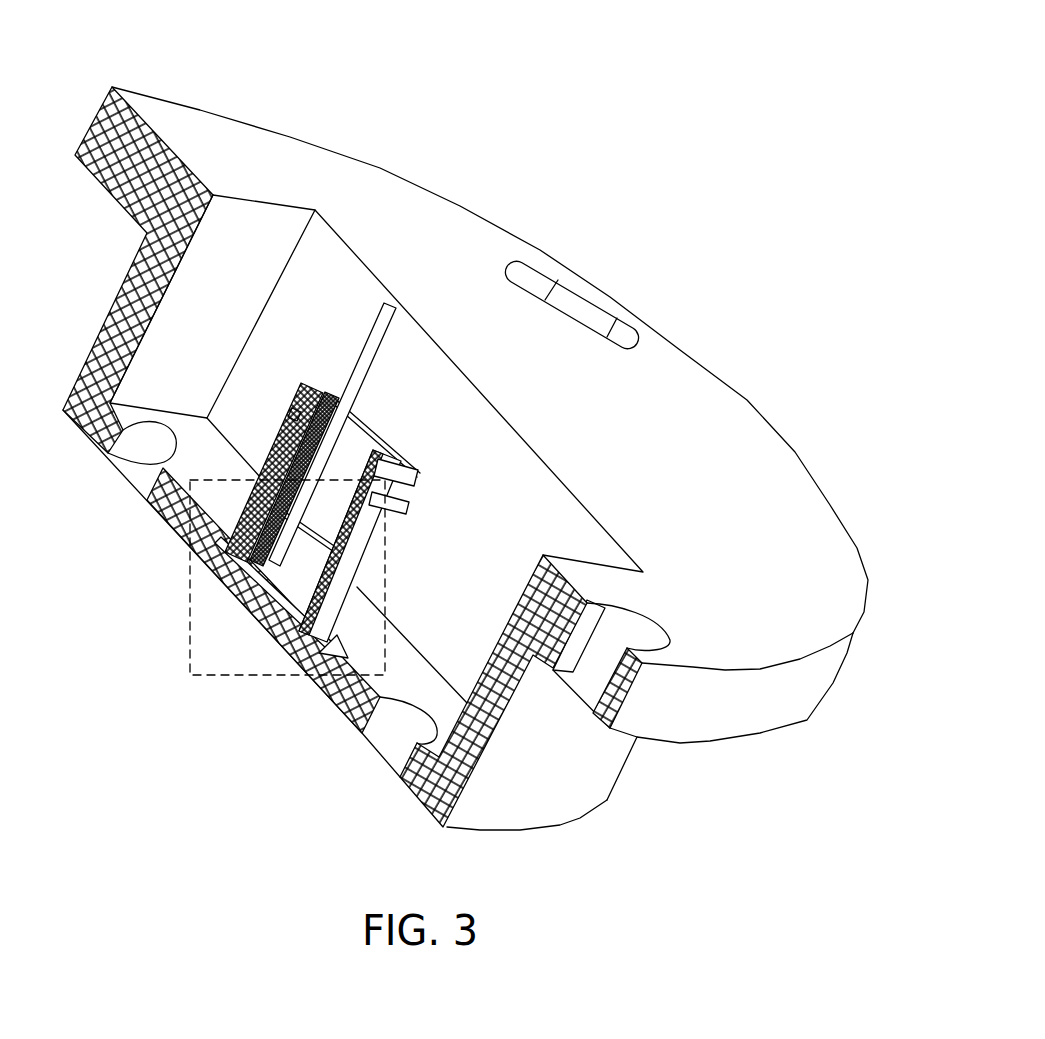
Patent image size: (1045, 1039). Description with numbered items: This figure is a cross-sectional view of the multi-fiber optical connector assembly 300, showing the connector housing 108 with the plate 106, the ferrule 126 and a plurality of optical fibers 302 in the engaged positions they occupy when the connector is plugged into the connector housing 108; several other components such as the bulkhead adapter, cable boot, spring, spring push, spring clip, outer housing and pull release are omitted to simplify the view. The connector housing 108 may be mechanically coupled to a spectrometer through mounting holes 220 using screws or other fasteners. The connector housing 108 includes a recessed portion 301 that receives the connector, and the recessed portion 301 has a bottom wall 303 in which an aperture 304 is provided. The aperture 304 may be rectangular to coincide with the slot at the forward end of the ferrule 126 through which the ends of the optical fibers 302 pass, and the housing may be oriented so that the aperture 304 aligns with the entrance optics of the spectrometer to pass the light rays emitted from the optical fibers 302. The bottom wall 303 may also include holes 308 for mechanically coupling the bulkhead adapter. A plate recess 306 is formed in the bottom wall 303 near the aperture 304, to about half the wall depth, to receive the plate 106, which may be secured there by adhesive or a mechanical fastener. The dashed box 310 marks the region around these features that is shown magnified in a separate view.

The multi-fiber optical connector assembly 300 is at (527, 153).
The connector housing 108 is at (677, 340).
The mounting holes 220 is at (573, 300).
The recessed portion 301 is at (185, 328).
The bottom wall 303 is at (112, 436).
The ferrule 126 is at (250, 495).
The plate 106 is at (200, 530).
The optical fibers 302 is at (217, 580).
The aperture 304 is at (240, 595).
The plate recess 306 is at (303, 657).
The holes 308 is at (400, 747).
The box 310 is at (190, 658).